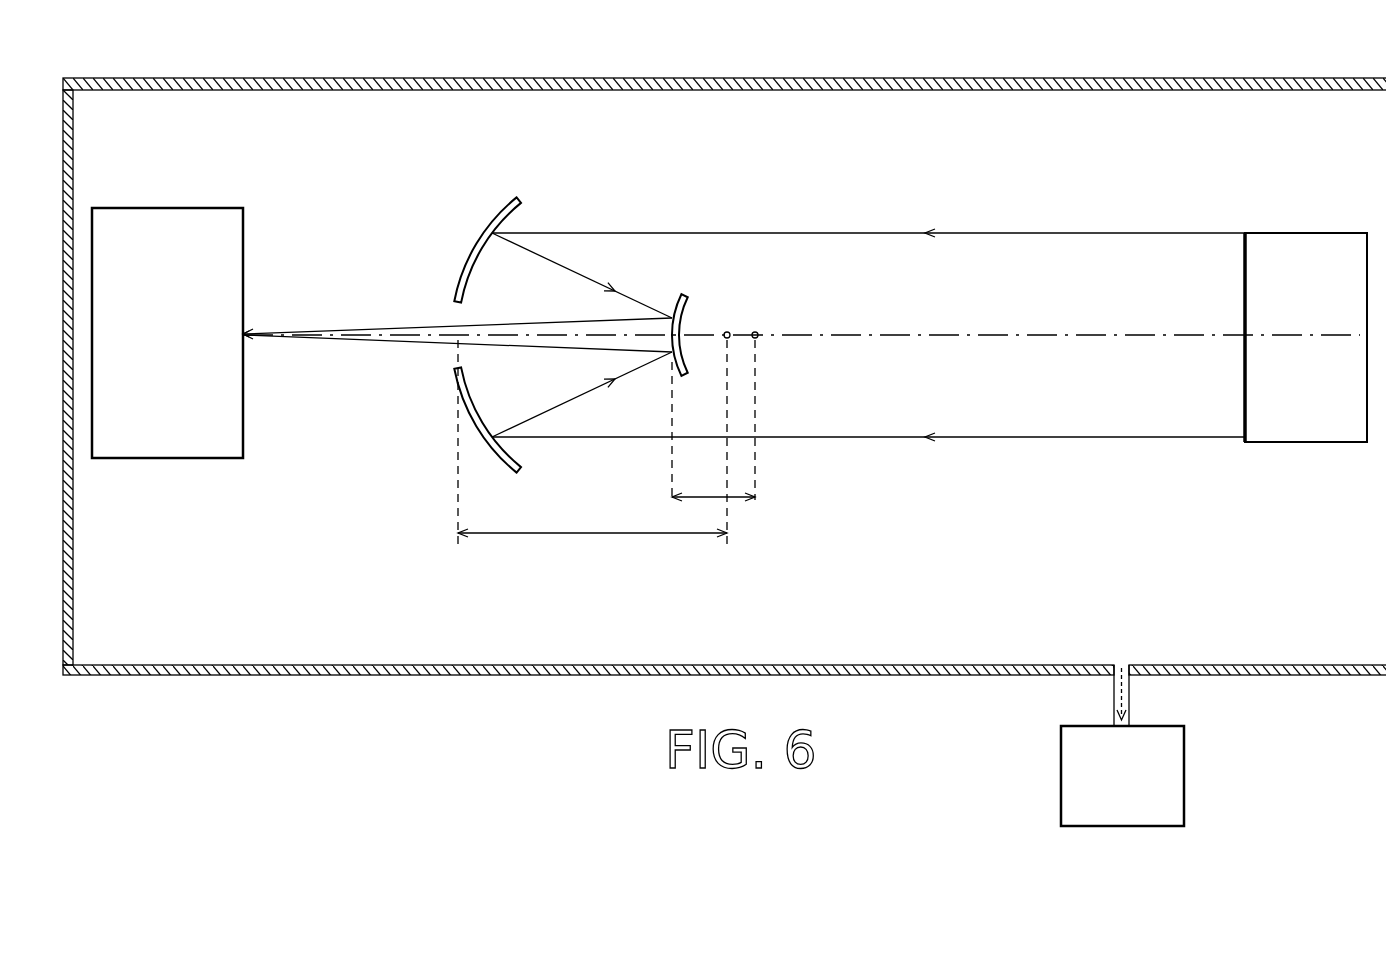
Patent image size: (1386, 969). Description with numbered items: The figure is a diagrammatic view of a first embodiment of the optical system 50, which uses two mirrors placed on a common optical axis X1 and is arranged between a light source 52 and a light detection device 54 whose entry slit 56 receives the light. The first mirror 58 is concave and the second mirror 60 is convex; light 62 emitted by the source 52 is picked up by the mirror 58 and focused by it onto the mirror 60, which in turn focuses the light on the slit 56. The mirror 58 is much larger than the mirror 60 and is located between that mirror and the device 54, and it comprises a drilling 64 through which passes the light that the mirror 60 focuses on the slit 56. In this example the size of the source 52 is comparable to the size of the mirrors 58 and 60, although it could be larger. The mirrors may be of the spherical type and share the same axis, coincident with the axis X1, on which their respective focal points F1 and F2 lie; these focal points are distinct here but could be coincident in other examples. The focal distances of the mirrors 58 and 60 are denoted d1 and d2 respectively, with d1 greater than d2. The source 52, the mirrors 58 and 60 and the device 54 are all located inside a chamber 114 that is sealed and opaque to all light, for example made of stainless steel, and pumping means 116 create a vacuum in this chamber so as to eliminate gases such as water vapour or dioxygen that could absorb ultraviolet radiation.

The optical system 50 is at (736, 207).
The light source 52 is at (1310, 245).
The light detection device 54 is at (196, 222).
The entry slit 56 is at (248, 322).
The first mirror 58 is at (502, 208).
The second mirror 60 is at (685, 300).
The light 62 is at (1115, 233).
The drilling 64 is at (458, 310).
The chamber 114 is at (319, 678).
The pumping means 116 is at (1173, 758).
The optical axis X1 is at (1122, 340).
The focal point of the first mirror F1 is at (730, 332).
The focal point of the second mirror F2 is at (758, 338).
The focal distance of the first mirror d1 is at (592, 442).
The focal distance of the second mirror d2 is at (713, 431).